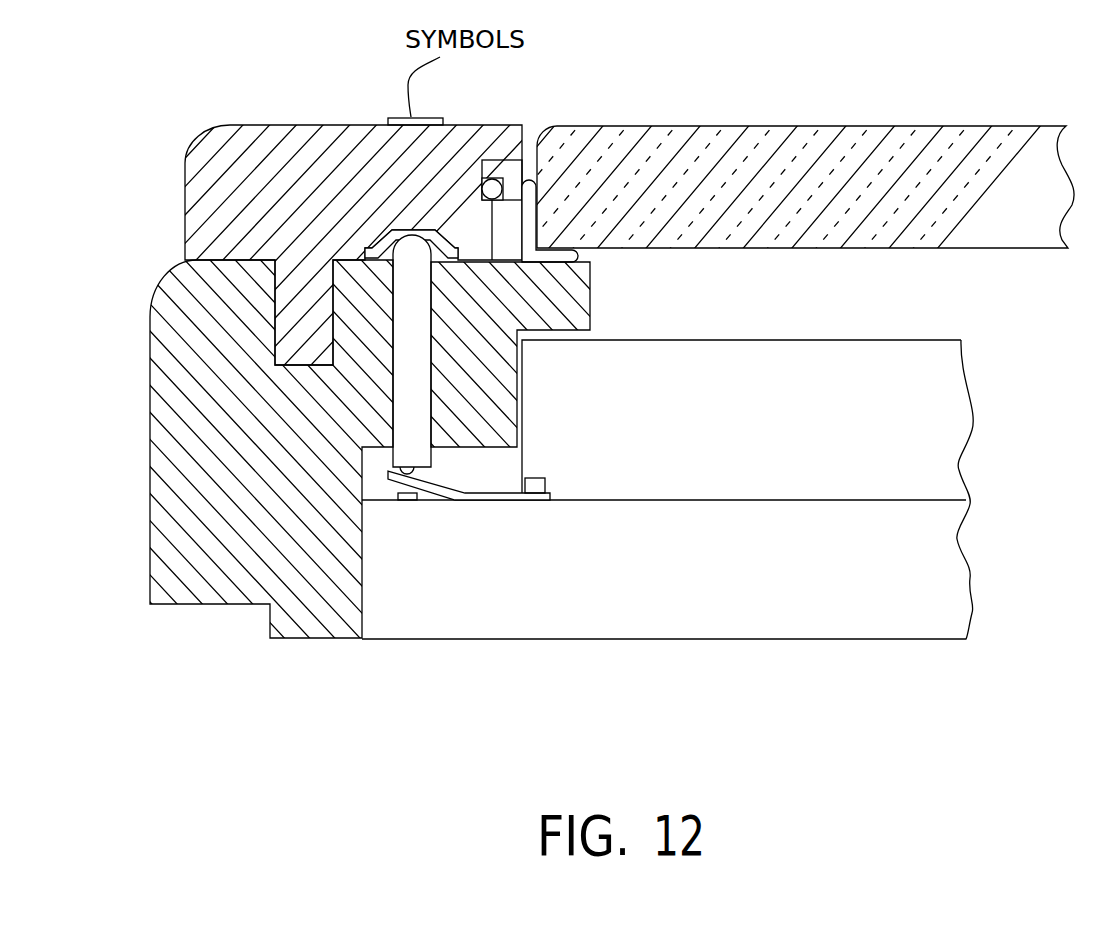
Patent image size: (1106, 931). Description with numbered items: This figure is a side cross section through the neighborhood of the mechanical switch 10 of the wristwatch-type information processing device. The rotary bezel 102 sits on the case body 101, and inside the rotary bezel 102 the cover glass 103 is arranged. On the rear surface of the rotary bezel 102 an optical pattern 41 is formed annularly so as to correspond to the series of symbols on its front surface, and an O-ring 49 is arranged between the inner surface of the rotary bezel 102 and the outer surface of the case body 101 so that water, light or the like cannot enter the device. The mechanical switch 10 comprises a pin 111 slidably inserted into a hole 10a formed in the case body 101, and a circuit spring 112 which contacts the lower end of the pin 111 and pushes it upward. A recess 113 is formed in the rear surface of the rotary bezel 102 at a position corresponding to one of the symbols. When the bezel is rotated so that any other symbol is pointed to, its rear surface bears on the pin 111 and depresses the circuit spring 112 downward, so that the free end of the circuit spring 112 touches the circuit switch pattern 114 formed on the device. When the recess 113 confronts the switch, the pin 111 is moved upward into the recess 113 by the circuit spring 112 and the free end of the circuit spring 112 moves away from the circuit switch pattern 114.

The mechanical switch 10 is at (477, 523).
The hole 10a is at (410, 318).
The optical pattern 41 is at (410, 250).
The O-ring 49 is at (492, 180).
The case body 101 is at (168, 335).
The rotary bezel 102 is at (222, 130).
The cover glass 103 is at (765, 132).
The pin 111 is at (420, 380).
The circuit spring 112 is at (480, 497).
The recess 113 is at (398, 240).
The circuit switch pattern 114 is at (417, 503).